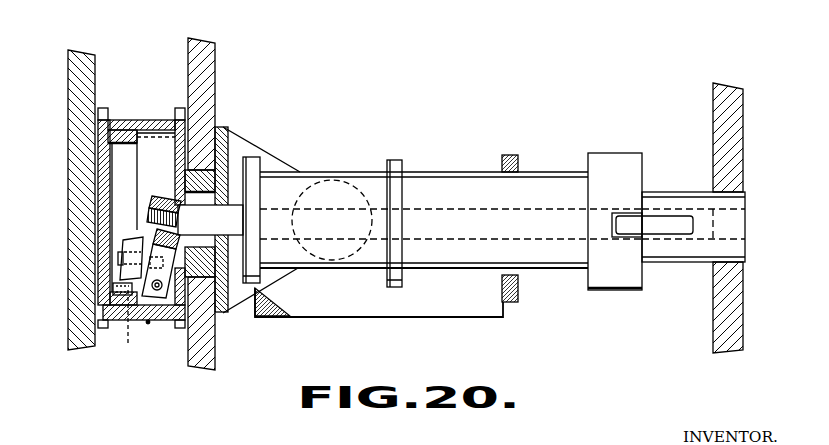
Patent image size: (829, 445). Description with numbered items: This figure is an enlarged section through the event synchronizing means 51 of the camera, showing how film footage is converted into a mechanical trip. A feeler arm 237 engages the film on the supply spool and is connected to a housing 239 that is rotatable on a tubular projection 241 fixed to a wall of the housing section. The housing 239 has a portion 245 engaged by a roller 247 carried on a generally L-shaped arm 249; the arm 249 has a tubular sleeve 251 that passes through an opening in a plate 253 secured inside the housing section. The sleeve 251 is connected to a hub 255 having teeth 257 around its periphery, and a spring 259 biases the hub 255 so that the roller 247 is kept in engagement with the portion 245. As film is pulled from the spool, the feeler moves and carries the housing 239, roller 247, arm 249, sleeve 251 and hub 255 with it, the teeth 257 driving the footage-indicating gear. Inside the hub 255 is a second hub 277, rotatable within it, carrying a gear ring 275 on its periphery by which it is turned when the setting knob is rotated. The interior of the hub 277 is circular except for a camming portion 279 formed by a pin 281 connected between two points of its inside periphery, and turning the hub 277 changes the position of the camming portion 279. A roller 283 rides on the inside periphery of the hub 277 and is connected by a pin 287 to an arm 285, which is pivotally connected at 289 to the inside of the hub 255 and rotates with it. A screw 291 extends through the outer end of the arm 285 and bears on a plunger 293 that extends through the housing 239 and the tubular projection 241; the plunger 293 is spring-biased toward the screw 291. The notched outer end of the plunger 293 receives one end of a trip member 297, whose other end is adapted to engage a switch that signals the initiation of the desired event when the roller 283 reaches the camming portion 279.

The event synchronizing means 51 is at (185, 385).
The feeler arm 237 is at (514, 155).
The housing 239 is at (425, 172).
The tubular projection 241 is at (670, 264).
The portion 245 is at (336, 316).
The roller 247 is at (338, 178).
The L-shaped arm 249 is at (263, 155).
The tubular sleeve 251 is at (216, 172).
The plate 253 is at (207, 52).
The hub 255 is at (157, 119).
The teeth 257 is at (178, 108).
The spring 259 is at (149, 323).
The gear ring 275 is at (104, 108).
The hub 277 is at (112, 156).
The camming portion 279 is at (110, 288).
The pin 281 is at (118, 323).
The roller 283 is at (125, 244).
The arm 285 is at (162, 195).
The pin 287 is at (128, 258).
The pivot connection 289 is at (157, 287).
The screw 291 is at (153, 212).
The plunger 293 is at (225, 226).
The trip member 297 is at (653, 222).